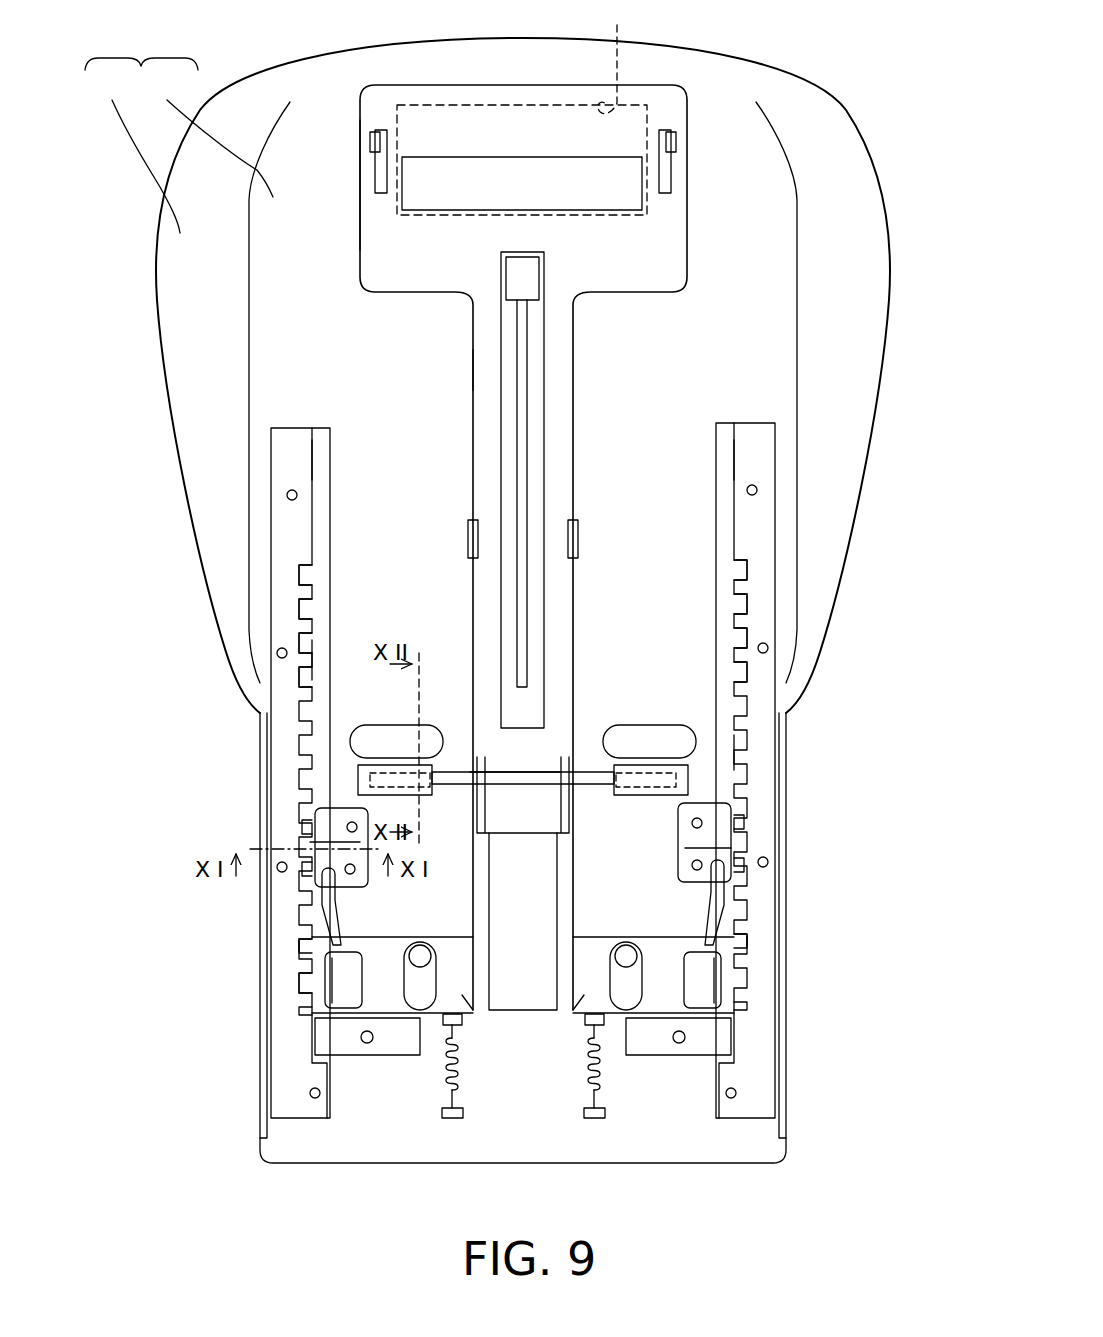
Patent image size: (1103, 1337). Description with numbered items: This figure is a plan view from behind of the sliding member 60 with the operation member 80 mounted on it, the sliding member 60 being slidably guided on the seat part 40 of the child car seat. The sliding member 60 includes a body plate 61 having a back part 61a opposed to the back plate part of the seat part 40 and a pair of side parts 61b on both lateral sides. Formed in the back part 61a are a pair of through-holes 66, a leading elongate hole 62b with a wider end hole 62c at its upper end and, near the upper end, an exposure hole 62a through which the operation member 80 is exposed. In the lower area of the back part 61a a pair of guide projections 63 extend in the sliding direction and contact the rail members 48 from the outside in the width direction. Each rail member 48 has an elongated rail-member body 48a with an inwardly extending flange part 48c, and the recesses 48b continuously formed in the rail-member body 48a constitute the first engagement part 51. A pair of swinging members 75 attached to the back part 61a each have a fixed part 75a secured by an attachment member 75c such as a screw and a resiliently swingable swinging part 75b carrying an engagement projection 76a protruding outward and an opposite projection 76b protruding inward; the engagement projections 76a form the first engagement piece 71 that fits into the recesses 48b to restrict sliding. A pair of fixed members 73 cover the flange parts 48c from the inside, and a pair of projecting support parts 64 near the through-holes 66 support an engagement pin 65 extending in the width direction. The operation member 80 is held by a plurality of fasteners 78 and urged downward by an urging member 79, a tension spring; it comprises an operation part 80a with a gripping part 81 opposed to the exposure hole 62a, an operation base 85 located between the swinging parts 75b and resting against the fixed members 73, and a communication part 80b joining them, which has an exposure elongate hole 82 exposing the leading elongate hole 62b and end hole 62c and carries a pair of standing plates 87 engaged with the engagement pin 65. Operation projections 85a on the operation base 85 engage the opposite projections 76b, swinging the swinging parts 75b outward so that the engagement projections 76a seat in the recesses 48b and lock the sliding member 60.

The seat part 40 is at (296, 425).
The rail member 48 is at (300, 514).
The rail-member body 48a is at (318, 662).
The recesses 48b is at (305, 641).
The flange part 48c is at (322, 497).
The first engagement part 51 is at (523, 674).
The sliding member 60 is at (828, 74).
The body plate 61 is at (141, 48).
The back part 61a is at (212, 134).
The side parts 61b is at (902, 334).
The exposure hole 62a is at (623, 57).
The leading elongate hole 62b is at (527, 425).
The end hole 62c is at (530, 278).
The guide projections 63 is at (259, 1092).
The projecting support part 64 is at (432, 797).
The engagement pin 65 is at (630, 770).
The through-holes 66 is at (376, 729).
The first engagement piece 71 is at (523, 943).
The fixed member 73 is at (397, 1044).
The swinging member 75 is at (312, 832).
The fixed part 75a is at (312, 843).
The swinging part 75b is at (300, 978).
The attachment member 75c is at (313, 826).
The engagement projection 76a is at (300, 948).
The opposite projection 76b is at (300, 939).
The fasteners 78 is at (369, 142).
The urging member 79 is at (460, 1082).
The operation member 80 is at (692, 247).
The operation part 80a is at (357, 250).
The communication part 80b is at (470, 372).
The gripping part 81 is at (520, 168).
The exposure elongate hole 82 is at (543, 484).
The operation base 85 is at (560, 1014).
The operation projection 85a is at (350, 948).
The standing plates 87 is at (564, 760).